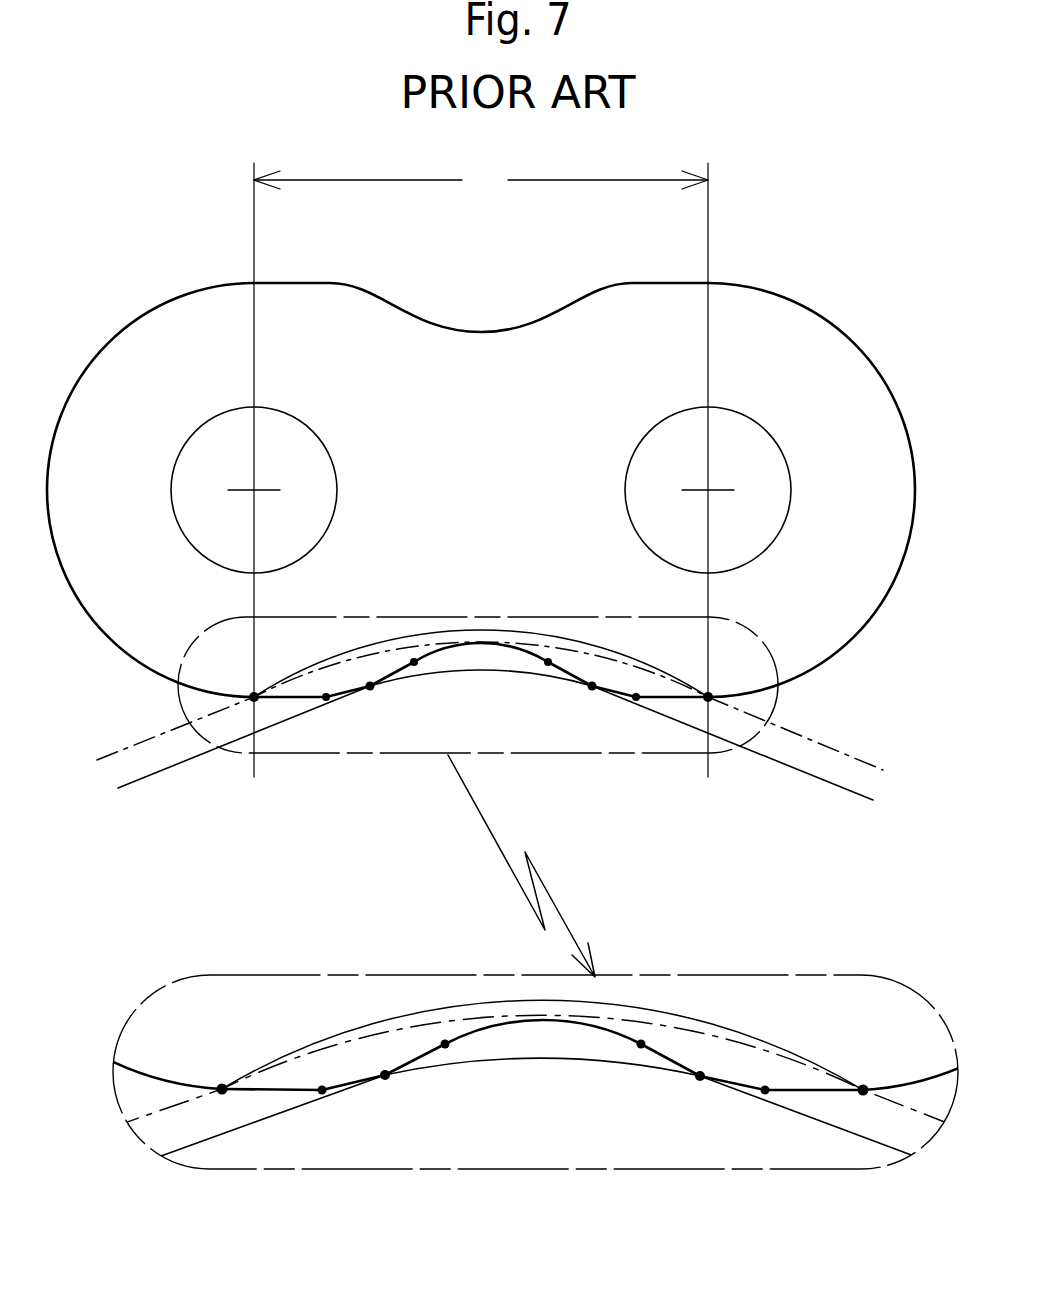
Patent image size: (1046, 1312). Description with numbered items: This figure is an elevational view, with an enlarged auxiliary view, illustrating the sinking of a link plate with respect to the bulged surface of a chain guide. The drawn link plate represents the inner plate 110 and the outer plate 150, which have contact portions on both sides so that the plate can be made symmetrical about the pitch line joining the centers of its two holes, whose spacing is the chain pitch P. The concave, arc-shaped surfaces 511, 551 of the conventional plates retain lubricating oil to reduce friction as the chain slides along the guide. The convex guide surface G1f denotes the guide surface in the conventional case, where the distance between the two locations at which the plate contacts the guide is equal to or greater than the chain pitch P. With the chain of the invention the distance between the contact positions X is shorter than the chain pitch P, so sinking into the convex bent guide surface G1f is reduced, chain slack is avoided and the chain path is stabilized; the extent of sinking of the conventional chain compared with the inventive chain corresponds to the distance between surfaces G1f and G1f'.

The inner plate 110 is at (507, 668).
The outer plate 150 is at (133, 352).
The concave arc-shaped surface 511 is at (557, 809).
The concave arc-shaped surface 551 is at (571, 644).
The chain pitch P is at (481, 179).
The contact locations X is at (386, 699).
The convex guide surface G1f is at (524, 950).
The convex guide surface G1f' is at (513, 927).